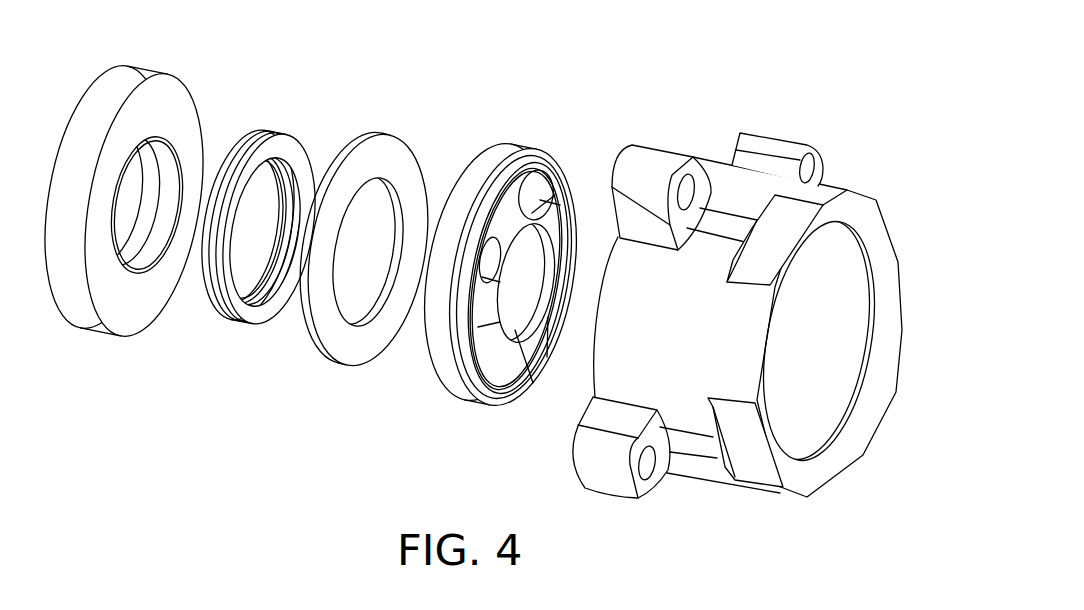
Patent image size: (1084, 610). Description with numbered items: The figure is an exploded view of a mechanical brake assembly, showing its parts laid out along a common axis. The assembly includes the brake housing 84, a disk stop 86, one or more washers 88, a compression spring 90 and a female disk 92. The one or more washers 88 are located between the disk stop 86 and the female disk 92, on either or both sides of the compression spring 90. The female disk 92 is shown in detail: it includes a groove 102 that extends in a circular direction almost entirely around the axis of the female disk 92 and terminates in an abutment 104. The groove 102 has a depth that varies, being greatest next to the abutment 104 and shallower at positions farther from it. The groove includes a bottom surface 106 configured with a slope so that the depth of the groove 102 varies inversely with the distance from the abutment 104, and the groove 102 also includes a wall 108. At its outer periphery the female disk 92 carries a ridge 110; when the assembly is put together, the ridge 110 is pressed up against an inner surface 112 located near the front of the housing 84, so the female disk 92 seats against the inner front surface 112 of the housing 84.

The brake housing 84 is at (767, 338).
The disk stop 86 is at (168, 87).
The washers 88 is at (393, 148).
The compression spring 90 is at (283, 145).
The female disk 92 is at (527, 262).
The groove 102 is at (527, 262).
The abutment 104 is at (503, 225).
The bottom surface 106 is at (507, 368).
The wall 108 is at (567, 223).
The ridge 110 is at (485, 403).
The inner surface 112 is at (862, 332).